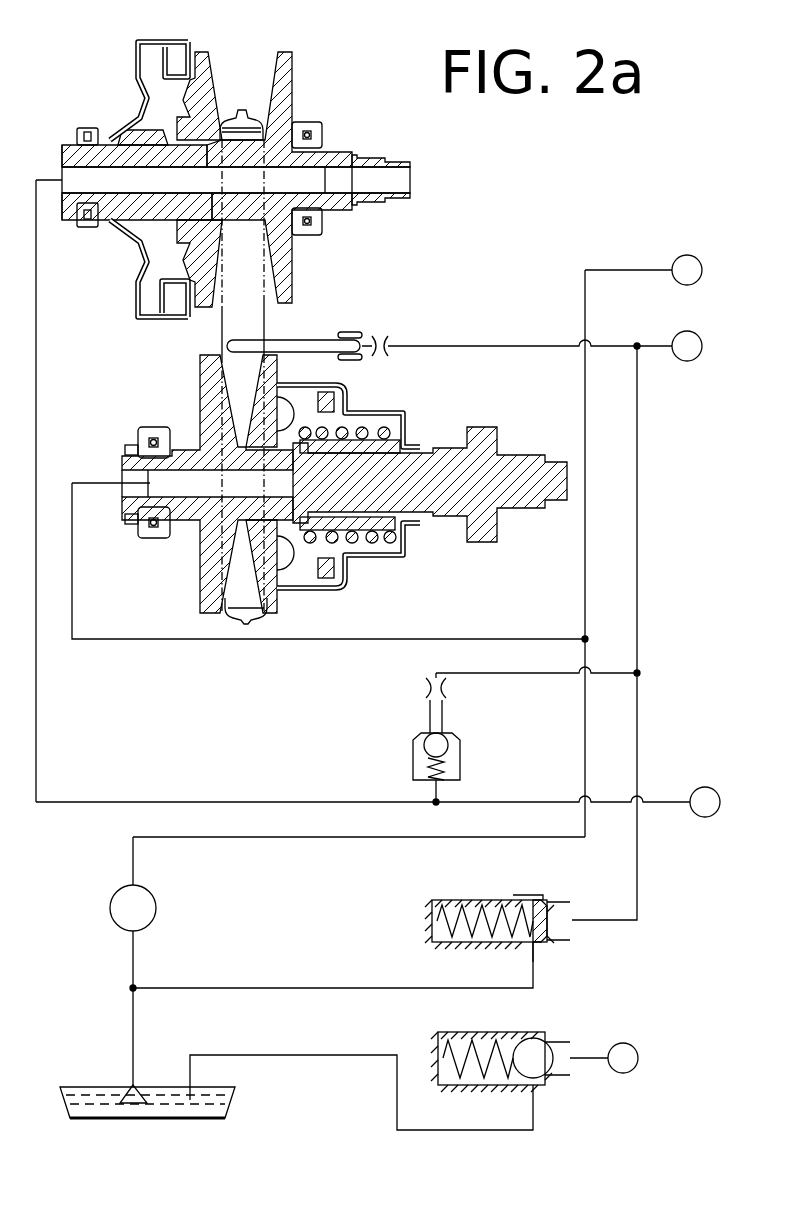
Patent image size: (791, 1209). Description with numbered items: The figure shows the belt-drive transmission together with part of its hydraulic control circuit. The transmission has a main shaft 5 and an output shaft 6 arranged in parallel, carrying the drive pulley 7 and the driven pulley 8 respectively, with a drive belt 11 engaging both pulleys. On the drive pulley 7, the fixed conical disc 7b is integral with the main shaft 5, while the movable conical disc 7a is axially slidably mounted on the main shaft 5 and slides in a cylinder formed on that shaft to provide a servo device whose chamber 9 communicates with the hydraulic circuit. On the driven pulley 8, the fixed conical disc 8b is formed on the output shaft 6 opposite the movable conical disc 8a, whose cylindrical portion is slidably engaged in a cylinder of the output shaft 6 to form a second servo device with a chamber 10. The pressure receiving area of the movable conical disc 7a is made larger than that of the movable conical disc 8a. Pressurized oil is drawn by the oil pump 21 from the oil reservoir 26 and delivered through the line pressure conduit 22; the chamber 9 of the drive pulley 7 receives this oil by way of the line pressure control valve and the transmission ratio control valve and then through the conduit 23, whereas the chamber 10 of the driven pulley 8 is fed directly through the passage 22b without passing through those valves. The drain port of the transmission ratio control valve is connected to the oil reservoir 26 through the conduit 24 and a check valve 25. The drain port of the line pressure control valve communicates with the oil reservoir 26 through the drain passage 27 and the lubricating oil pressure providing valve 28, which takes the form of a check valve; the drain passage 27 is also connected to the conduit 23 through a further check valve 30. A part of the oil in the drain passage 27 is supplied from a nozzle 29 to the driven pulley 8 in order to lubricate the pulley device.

The main shaft 5 is at (350, 152).
The output shaft 6 is at (495, 468).
The drive pulley 7 is at (207, 310).
The movable conical disc 7a is at (205, 60).
The fixed conical disc 7b is at (290, 96).
The driven pulley 8 is at (219, 491).
The movable conical disc 8a is at (280, 602).
The fixed conical disc 8b is at (213, 572).
The chamber 9 is at (146, 92).
The chamber 10 is at (373, 545).
The drive belt 11 is at (250, 112).
The oil pump 21 is at (156, 905).
The line pressure conduit 22 is at (590, 268).
The passage 22b is at (460, 638).
The conduit 23 is at (652, 801).
The conduit 24 is at (578, 1052).
The check valve 25 is at (483, 1019).
The oil reservoir 26 is at (232, 1110).
The drain passage 27 is at (640, 880).
The lubricating oil pressure providing valve 28 is at (468, 893).
The nozzle 29 is at (300, 340).
The check valve 30 is at (460, 768).